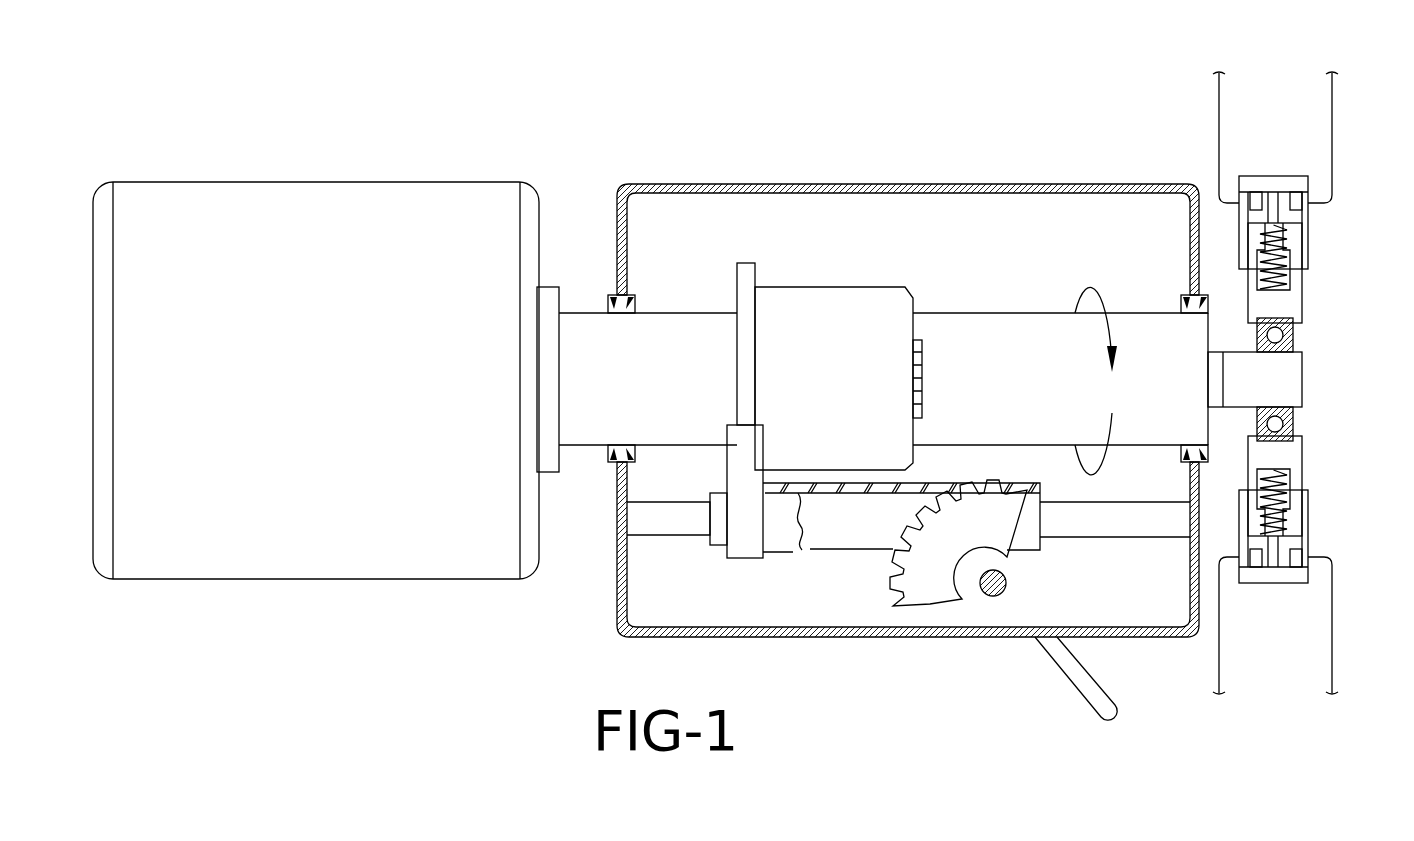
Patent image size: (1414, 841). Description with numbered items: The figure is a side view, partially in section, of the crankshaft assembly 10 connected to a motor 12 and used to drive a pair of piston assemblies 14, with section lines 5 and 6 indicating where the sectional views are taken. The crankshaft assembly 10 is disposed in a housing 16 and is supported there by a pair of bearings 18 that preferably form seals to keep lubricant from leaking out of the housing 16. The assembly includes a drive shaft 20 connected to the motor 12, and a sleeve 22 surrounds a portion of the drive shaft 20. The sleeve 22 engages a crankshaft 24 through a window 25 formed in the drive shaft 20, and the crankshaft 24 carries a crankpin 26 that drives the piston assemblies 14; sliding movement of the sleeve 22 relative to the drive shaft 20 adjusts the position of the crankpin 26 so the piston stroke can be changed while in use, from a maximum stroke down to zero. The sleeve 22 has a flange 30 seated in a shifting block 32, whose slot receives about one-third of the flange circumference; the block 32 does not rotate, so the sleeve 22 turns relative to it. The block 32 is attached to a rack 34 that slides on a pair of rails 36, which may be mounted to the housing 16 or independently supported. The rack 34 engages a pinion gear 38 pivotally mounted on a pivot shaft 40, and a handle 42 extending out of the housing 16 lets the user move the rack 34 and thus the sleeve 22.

The crankshaft assembly 10 is at (890, 262).
The motor 12 is at (305, 194).
The piston assembly 14 is at (1318, 280).
The housing 16 is at (818, 184).
The bearing 18 is at (1178, 303).
The drive shaft 20 is at (690, 326).
The sleeve 22 is at (836, 300).
The crankshaft 24 is at (1302, 394).
The window 25 is at (924, 360).
The crankpin 26 is at (1295, 369).
The flange 30 is at (745, 262).
The shifting block 32 is at (746, 548).
The rack 34 is at (793, 537).
The rail 36 is at (670, 520).
The pinion gear 38 is at (935, 587).
The pivot shaft 40 is at (988, 597).
The handle 42 is at (1097, 690).
The section line 5- 5 is at (1152, 170).
The section line 6- 6 is at (643, 210).